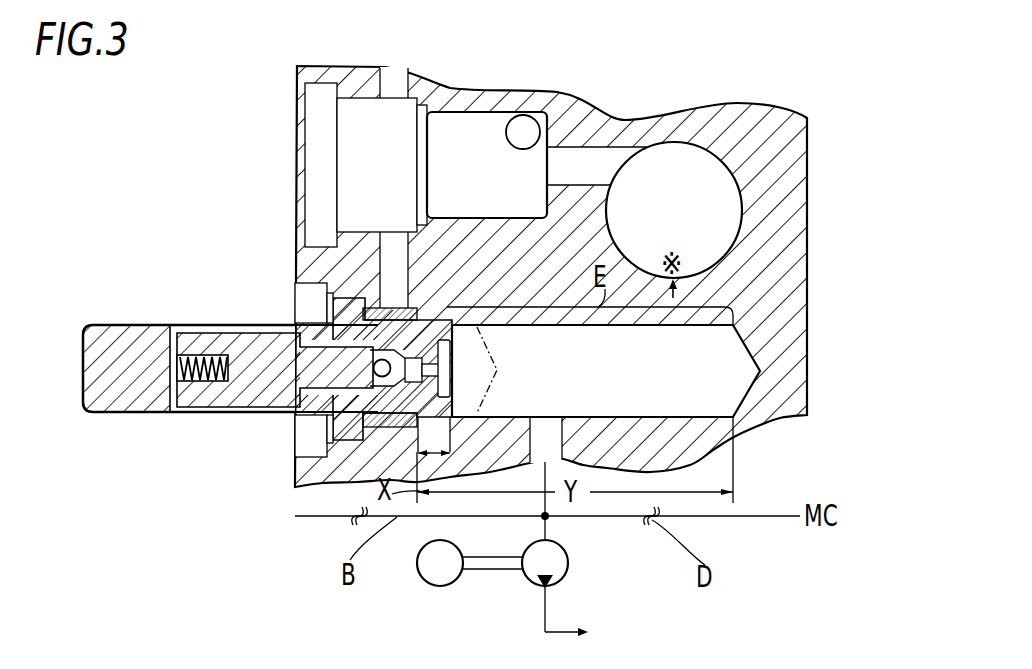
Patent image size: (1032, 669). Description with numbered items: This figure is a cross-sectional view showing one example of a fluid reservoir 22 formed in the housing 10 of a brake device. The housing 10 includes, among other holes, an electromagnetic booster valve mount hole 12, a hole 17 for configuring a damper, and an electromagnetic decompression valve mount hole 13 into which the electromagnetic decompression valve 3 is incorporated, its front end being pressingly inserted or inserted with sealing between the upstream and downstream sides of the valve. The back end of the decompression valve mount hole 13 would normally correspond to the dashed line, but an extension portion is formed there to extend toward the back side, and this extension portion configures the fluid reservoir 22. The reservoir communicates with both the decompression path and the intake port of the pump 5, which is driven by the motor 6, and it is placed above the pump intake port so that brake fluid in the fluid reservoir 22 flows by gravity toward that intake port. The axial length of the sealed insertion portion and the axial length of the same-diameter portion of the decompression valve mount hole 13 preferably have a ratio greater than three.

The electromagnetic decompression valve 3 is at (230, 415).
The pump 5 is at (560, 562).
The motor 6 is at (437, 587).
The housing 10 is at (743, 123).
The electromagnetic booster valve mount hole 12 is at (350, 172).
The electromagnetic decompression valve mount hole 13 is at (360, 420).
The hole for configuring a damper 17 is at (703, 202).
The fluid reservoir 22 is at (700, 372).